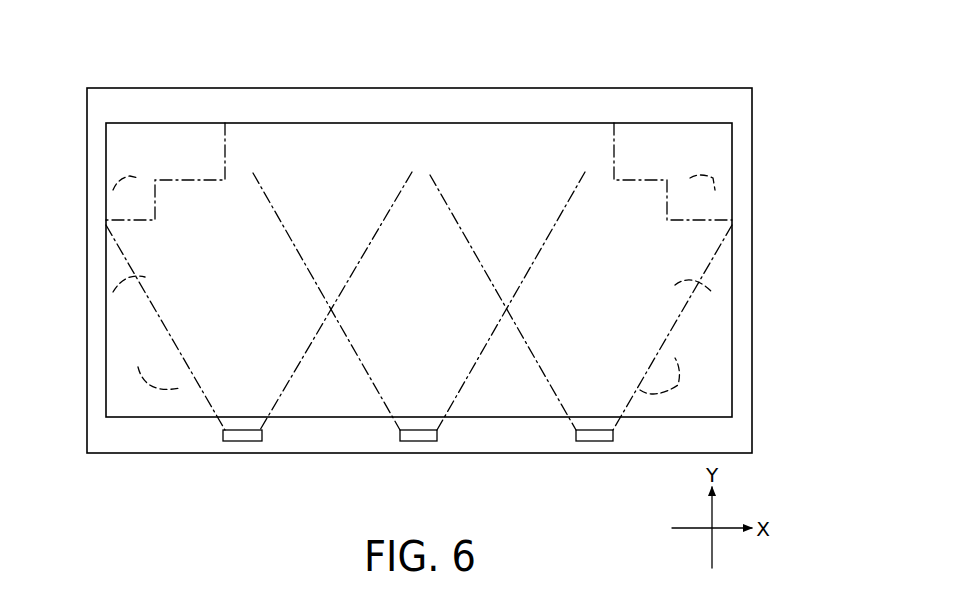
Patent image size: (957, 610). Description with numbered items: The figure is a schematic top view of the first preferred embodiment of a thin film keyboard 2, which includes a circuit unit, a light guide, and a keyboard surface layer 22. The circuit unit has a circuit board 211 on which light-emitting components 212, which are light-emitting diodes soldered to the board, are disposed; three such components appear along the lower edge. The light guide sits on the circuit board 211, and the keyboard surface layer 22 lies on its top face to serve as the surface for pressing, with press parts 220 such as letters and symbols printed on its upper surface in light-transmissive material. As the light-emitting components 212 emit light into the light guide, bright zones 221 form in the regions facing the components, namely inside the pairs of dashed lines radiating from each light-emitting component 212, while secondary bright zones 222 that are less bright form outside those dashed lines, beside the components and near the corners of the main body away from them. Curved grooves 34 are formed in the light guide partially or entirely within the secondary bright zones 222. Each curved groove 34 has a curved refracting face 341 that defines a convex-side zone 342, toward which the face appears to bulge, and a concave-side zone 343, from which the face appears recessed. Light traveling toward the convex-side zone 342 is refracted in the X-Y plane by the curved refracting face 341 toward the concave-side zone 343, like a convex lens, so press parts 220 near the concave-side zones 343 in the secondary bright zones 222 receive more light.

The thin film keyboard 2 is at (738, 72).
The keyboard surface layer 22 is at (533, 138).
The press parts 220 is at (428, 197).
The bright zones 221 is at (239, 180).
The secondary bright zones 222 is at (185, 145).
The circuit board 211 is at (740, 340).
The light-emitting component 212 is at (238, 437).
The curved grooves 34 is at (120, 177).
The curved refracting face 341 is at (130, 172).
The convex-side zone 342 is at (137, 373).
The concave-side zone 343 is at (150, 377).